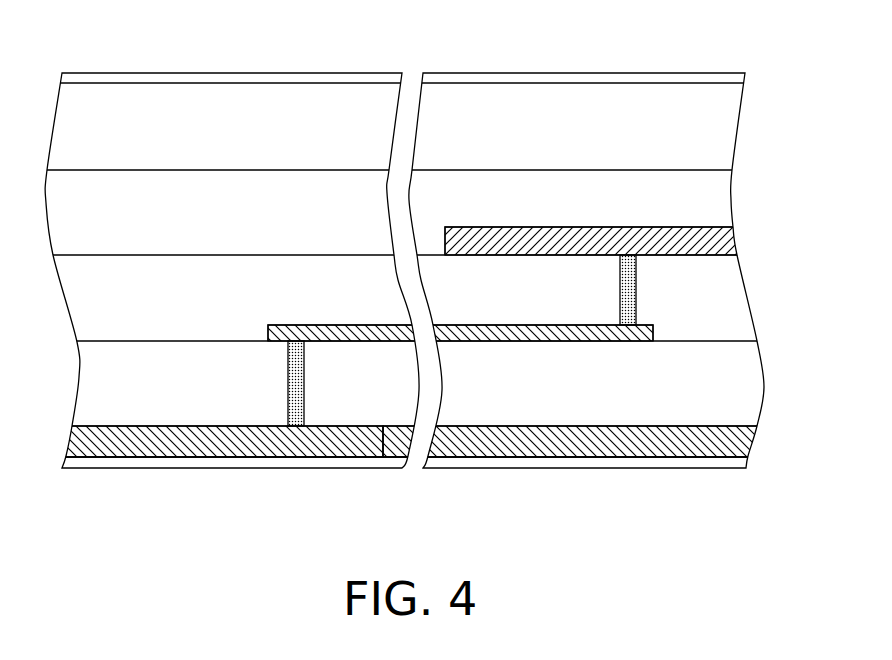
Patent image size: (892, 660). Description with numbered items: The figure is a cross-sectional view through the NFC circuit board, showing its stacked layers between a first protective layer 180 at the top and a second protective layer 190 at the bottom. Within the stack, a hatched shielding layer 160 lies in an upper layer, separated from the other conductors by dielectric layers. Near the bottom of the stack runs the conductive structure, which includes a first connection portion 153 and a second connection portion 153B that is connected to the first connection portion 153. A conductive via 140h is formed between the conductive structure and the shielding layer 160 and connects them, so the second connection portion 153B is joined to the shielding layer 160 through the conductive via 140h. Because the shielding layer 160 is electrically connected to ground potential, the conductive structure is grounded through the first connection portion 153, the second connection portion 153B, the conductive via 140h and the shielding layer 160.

The first protective layer 180 is at (327, 78).
The shielding layer 160 is at (733, 238).
The conductive via 140h is at (297, 390).
The first connection portion 153 is at (336, 447).
The second connection portion 153B is at (568, 447).
The second protective layer 190 is at (687, 462).